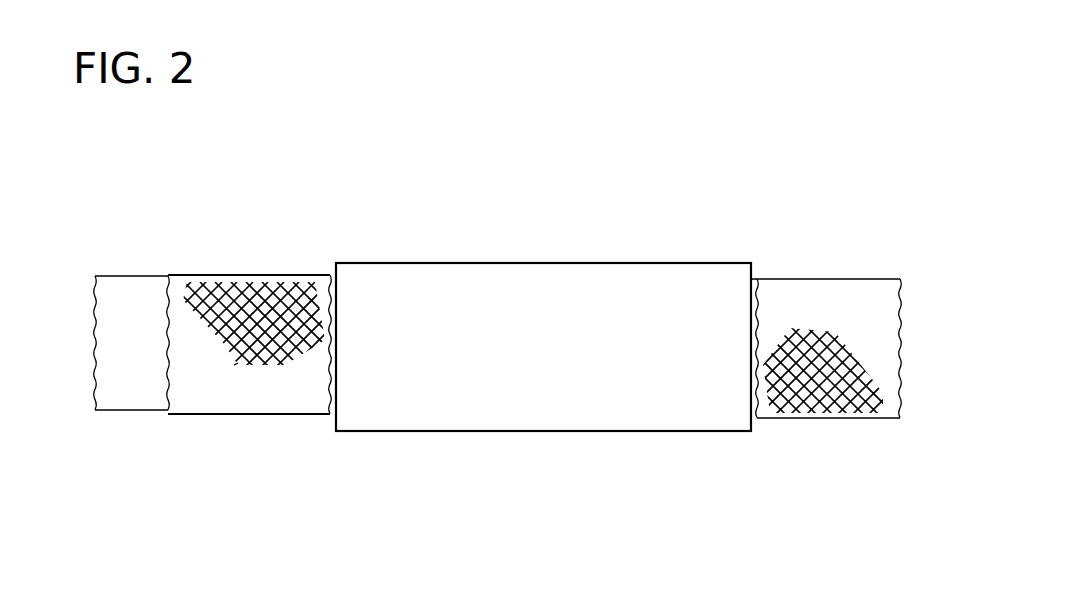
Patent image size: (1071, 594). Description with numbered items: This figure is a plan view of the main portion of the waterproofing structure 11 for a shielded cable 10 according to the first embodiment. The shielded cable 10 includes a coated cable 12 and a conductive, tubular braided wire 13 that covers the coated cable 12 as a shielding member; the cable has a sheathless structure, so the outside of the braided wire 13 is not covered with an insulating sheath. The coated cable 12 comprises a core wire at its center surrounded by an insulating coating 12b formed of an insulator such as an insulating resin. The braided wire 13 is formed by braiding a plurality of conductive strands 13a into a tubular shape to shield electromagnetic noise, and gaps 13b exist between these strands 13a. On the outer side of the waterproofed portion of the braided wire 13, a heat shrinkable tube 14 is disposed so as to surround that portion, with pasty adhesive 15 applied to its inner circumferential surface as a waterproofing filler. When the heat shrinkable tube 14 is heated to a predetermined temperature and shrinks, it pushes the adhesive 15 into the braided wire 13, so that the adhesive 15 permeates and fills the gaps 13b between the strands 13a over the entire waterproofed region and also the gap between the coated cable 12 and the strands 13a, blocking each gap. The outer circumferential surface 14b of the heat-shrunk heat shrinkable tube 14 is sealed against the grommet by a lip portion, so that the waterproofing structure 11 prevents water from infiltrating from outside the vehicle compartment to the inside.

The shielded cable 10 is at (797, 227).
The waterproofing structure 11 is at (475, 252).
The coated cable 12 is at (132, 411).
The insulating coating 12b is at (137, 283).
The braided wire 13 is at (257, 272).
The strands 13a is at (280, 355).
The gaps 13b is at (238, 363).
The heat shrinkable tube 14 is at (658, 261).
The outer circumferential surface 14b is at (660, 420).
The adhesive 15 is at (337, 362).